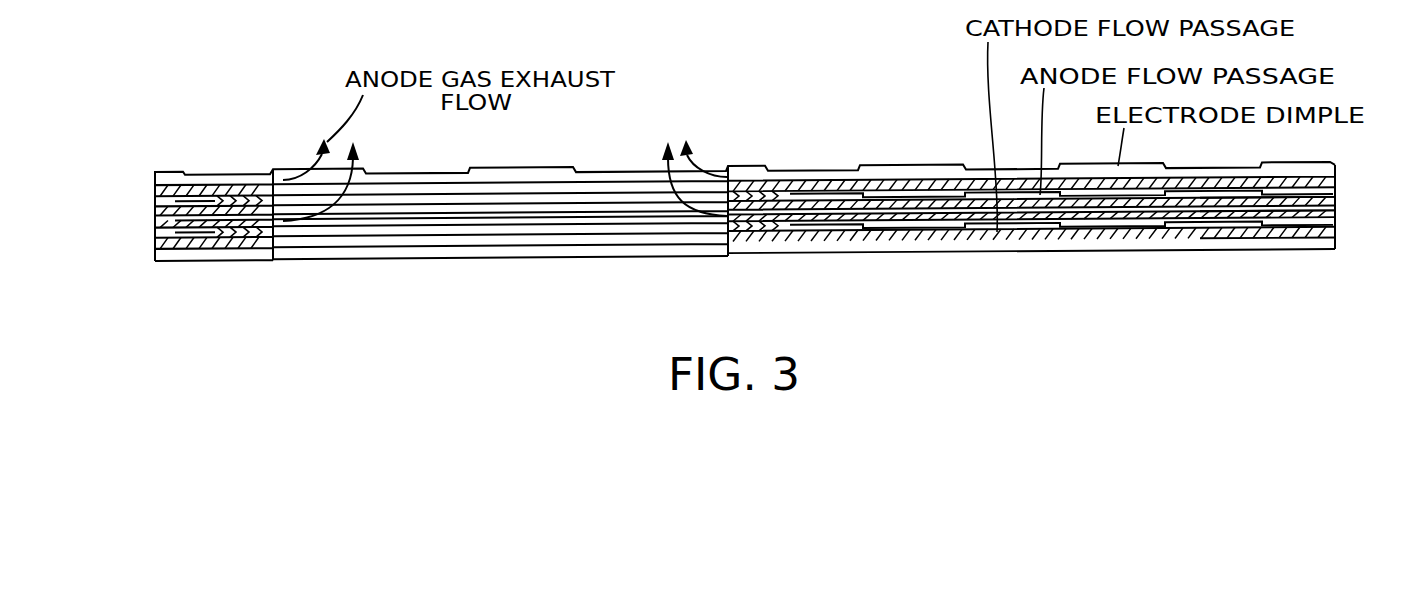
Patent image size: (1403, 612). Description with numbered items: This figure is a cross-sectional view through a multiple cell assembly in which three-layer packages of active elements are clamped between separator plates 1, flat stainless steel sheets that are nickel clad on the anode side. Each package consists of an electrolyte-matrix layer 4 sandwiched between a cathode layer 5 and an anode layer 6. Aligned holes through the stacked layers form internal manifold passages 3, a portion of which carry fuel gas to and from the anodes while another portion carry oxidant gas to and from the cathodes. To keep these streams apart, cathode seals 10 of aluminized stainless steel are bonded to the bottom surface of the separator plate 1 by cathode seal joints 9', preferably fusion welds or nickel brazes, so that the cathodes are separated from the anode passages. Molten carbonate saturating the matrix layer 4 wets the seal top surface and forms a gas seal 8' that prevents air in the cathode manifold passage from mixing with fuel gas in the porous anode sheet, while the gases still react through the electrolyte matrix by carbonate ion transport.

The separator plate 1 is at (1338, 249).
The manifold passage 3 is at (515, 263).
The electrolyte-matrix layer 4 is at (1337, 213).
The cathode layer 5 is at (1337, 228).
The anode layer 6 is at (1337, 203).
The gas seal 8' is at (1029, 154).
The cathode seal joint 9' is at (1031, 169).
The cathode seal 10 is at (772, 210).